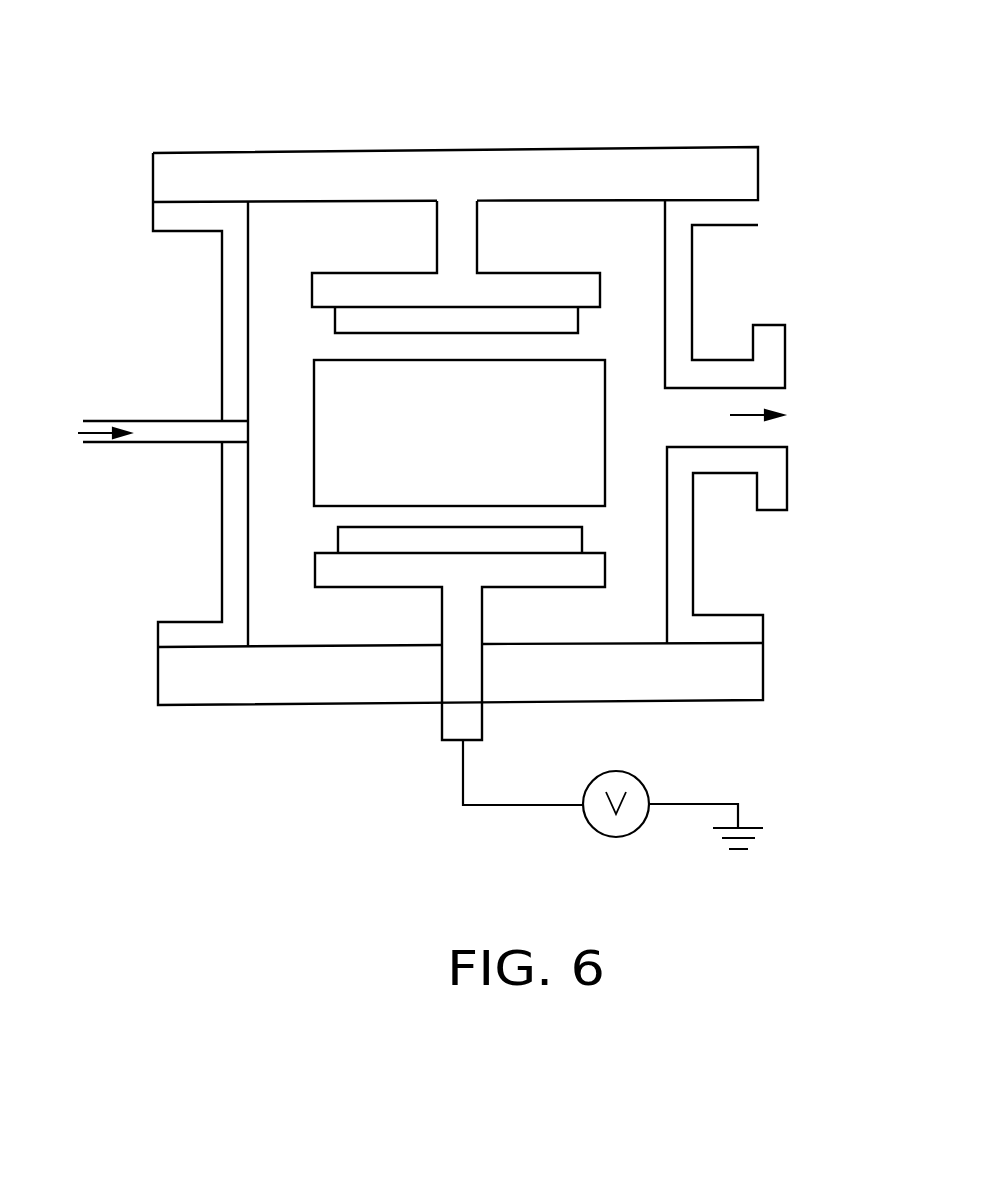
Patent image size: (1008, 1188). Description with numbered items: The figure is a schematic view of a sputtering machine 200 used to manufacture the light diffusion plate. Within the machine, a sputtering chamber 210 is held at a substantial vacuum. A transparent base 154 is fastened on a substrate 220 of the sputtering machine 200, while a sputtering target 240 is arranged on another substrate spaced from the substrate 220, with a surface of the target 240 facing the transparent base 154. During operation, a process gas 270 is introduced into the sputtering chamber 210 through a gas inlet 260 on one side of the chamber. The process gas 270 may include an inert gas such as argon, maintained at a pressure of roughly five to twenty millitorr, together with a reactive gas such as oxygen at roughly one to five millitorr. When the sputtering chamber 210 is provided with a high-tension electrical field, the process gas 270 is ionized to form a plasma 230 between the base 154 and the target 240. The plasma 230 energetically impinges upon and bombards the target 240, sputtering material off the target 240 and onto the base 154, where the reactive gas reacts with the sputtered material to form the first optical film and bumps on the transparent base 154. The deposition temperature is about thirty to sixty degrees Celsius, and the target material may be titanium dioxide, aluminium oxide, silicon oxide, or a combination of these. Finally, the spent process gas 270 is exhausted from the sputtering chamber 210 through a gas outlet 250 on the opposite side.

The sputtering machine 200 is at (508, 52).
The sputtering chamber 210 is at (378, 608).
The substrate 220 is at (570, 292).
The transparent base 154 is at (550, 322).
The plasma 230 is at (565, 460).
The sputtering target 240 is at (565, 540).
The gas outlet 250 is at (765, 402).
The gas inlet 260 is at (162, 428).
The process gas 270 is at (76, 435).